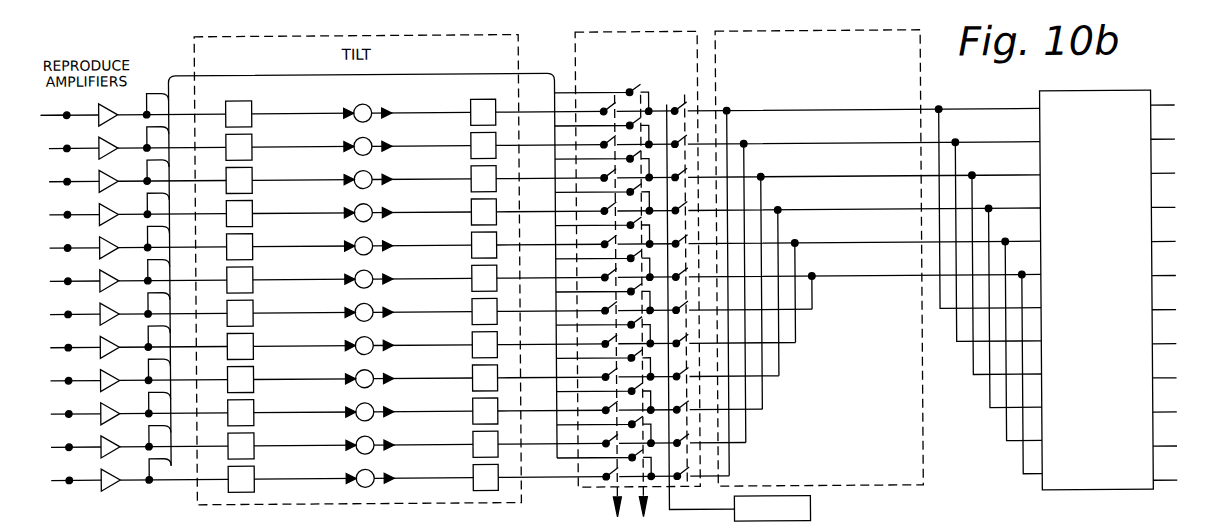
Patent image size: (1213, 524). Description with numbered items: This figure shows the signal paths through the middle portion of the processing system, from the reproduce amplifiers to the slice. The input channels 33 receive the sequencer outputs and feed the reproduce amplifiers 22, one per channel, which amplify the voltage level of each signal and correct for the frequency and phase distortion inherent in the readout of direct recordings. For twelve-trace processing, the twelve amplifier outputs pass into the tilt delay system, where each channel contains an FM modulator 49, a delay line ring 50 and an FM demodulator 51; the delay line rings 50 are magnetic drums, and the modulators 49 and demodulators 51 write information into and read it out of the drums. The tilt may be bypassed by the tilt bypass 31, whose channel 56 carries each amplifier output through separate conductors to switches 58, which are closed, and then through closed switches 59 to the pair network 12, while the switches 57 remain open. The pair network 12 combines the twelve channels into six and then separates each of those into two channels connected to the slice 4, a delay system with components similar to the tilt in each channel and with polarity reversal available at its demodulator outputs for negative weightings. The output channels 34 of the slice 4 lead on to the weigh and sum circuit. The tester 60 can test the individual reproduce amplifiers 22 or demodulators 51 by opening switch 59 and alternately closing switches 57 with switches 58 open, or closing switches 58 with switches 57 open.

The input channels 33 is at (60, 112).
The reproduce amplifiers 22 is at (97, 107).
The channel 56 is at (175, 73).
The FM modulators 49 is at (257, 108).
The delay line rings 50 is at (362, 102).
The FM demodulators 51 is at (474, 101).
The switches 57 is at (610, 98).
The switches 58 is at (640, 90).
The switches 59 is at (690, 104).
The tilt bypass 31 is at (637, 32).
The pair network 12 is at (815, 32).
The slice 4 is at (1072, 93).
The output channels 34 is at (1156, 108).
The tester 60 is at (809, 510).